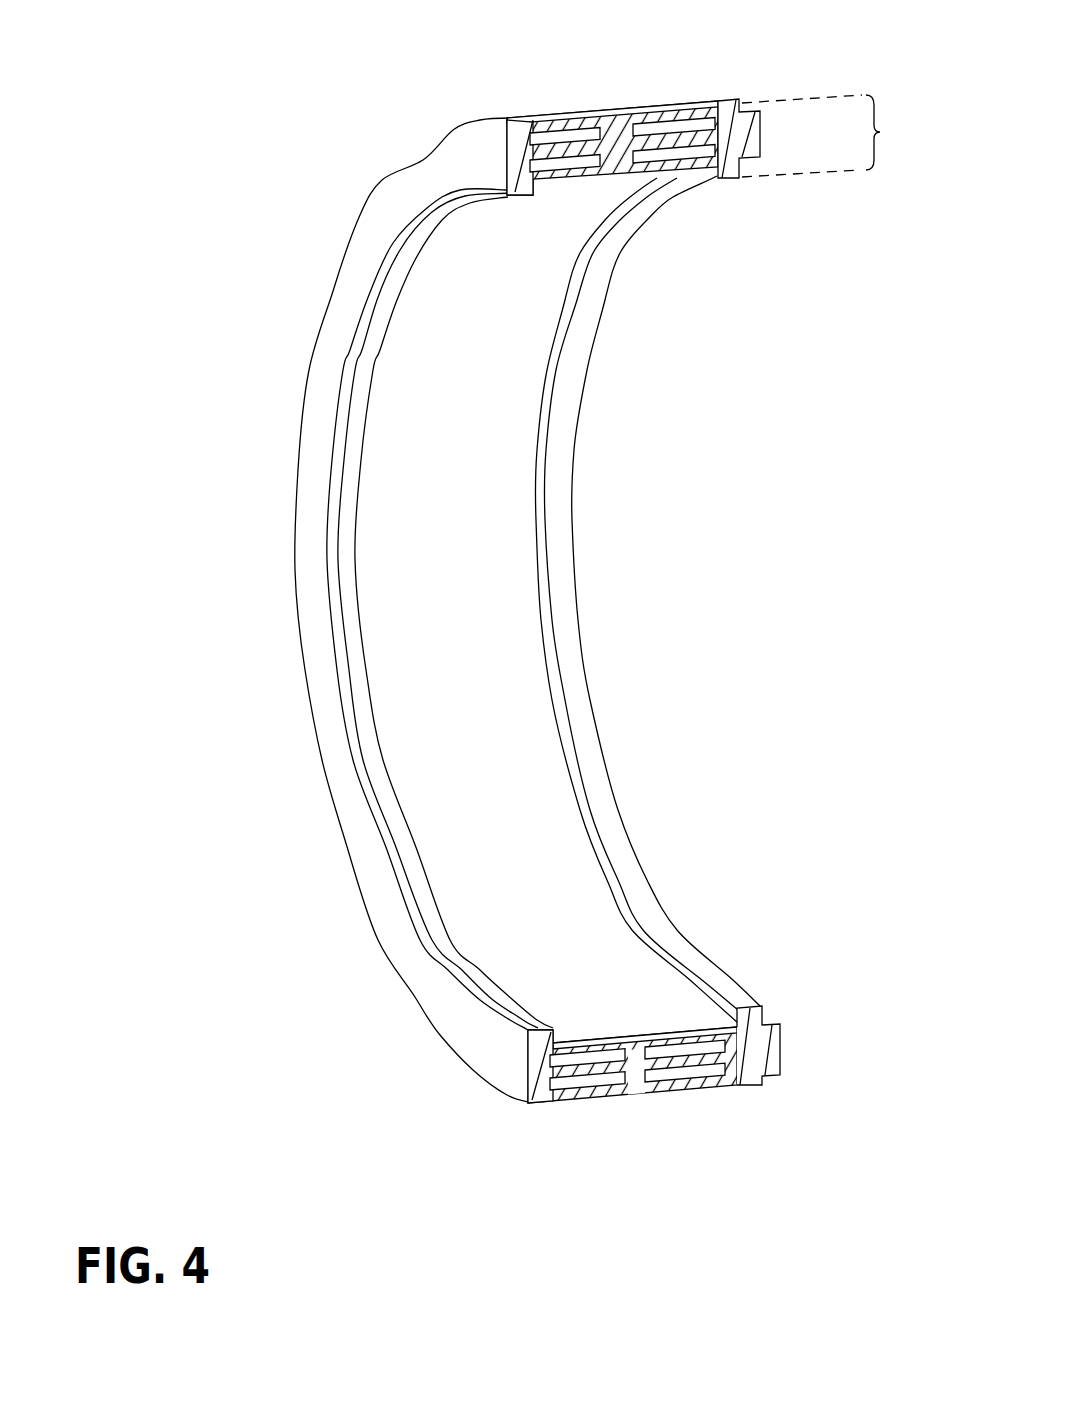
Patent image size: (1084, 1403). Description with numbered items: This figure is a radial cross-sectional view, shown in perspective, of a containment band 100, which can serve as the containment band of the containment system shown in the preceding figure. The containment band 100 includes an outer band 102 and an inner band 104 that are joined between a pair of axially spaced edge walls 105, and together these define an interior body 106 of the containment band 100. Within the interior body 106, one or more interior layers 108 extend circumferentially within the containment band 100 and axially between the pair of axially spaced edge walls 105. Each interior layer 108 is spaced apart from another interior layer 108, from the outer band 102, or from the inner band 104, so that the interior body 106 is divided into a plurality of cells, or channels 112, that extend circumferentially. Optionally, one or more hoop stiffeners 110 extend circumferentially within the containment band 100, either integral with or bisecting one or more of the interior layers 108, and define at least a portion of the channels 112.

The containment band 100 is at (208, 62).
The outer band 102 is at (510, 115).
The inner band 104 is at (510, 685).
The axially spaced edge walls 105 is at (513, 1070).
The interior body 106 is at (833, 136).
The interior layers 108 is at (565, 125).
The hoop stiffeners 110 is at (612, 140).
The channels 112 is at (653, 128).